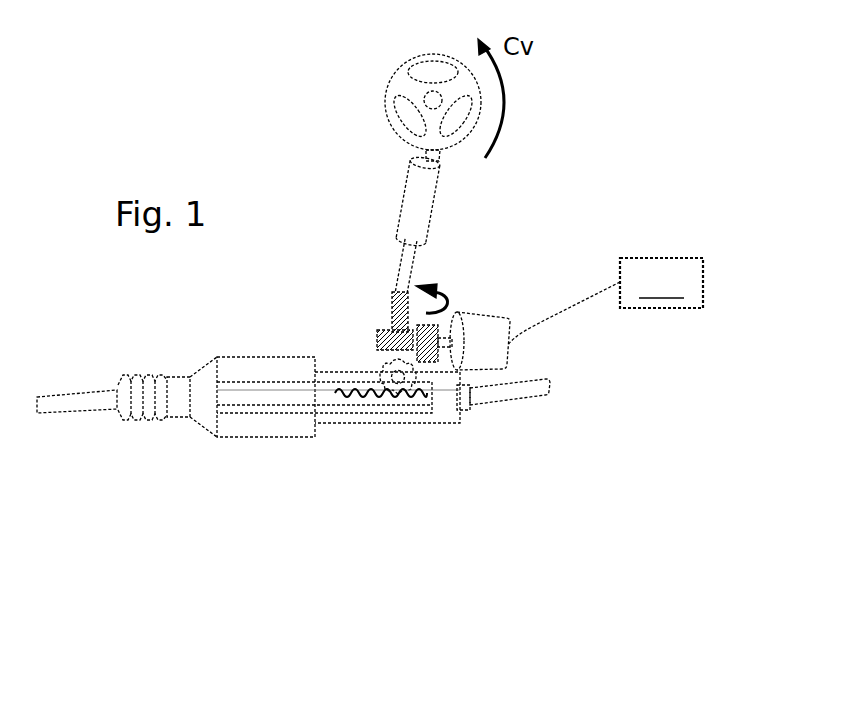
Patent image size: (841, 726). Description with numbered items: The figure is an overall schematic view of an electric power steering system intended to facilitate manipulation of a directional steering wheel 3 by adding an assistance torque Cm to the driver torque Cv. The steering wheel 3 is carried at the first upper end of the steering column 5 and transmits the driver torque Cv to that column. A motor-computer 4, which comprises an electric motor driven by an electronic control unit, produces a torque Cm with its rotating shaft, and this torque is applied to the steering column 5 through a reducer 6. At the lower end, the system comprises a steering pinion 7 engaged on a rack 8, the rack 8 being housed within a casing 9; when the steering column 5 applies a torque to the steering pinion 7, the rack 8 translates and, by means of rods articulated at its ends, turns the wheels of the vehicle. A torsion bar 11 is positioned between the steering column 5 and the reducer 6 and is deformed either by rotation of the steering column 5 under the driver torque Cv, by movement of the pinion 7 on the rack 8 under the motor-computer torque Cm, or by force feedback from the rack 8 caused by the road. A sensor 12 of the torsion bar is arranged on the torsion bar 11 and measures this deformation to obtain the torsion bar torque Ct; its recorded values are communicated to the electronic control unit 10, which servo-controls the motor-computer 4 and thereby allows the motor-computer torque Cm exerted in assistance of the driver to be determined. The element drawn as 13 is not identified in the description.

The steering wheel 3 is at (385, 100).
The torsion bar 11 is at (432, 194).
The steering column 5 is at (417, 250).
The reducer 6 is at (385, 332).
The sensor of the torsion bar 12 is at (445, 298).
The steering pinion 7 is at (386, 370).
The rack 8 is at (283, 405).
The casing 9 is at (203, 378).
The motor-computer 4 is at (503, 368).
The tie rod 13 is at (533, 392).
The ECU 10 is at (660, 309).